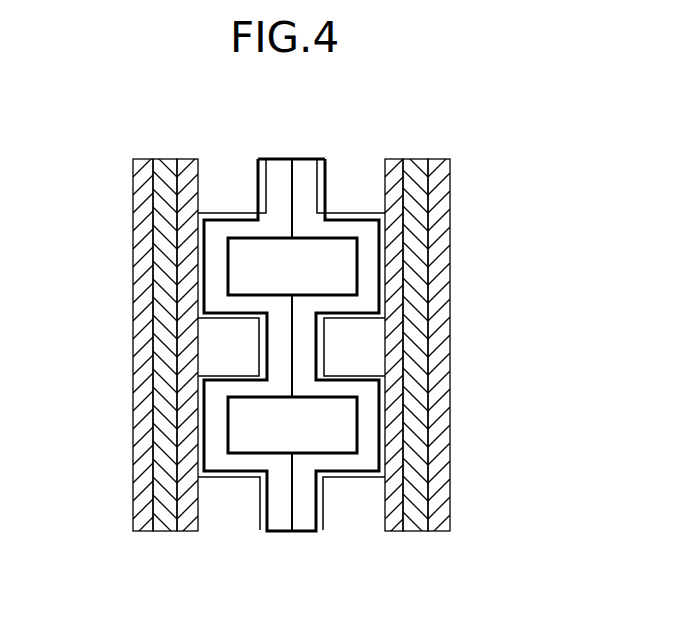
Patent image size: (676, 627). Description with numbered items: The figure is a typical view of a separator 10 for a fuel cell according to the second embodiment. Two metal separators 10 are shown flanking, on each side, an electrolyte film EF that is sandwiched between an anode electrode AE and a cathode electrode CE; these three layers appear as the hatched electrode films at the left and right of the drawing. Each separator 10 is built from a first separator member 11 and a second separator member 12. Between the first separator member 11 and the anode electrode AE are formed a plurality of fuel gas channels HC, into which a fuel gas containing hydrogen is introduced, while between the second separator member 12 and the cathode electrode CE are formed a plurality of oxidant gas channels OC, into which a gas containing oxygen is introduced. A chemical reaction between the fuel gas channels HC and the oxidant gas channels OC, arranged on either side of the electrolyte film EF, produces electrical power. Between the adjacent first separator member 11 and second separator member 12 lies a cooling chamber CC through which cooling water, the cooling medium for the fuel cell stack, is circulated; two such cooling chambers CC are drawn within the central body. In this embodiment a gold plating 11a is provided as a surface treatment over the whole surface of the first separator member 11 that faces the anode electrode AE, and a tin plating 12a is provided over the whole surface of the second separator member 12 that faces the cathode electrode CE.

The separator 10 is at (291, 316).
The first separator member 11 is at (275, 189).
The second separator member 12 is at (308, 190).
The gold plating 11a is at (230, 475).
The tin plating 12a is at (353, 477).
The electrolyte film EF is at (300, 353).
The cathode electrode CE is at (143, 531).
The anode electrode AE is at (182, 531).
The fuel gas channel HC is at (218, 335).
The oxidant gas channel OC is at (372, 352).
The cooling chamber CC is at (313, 283).